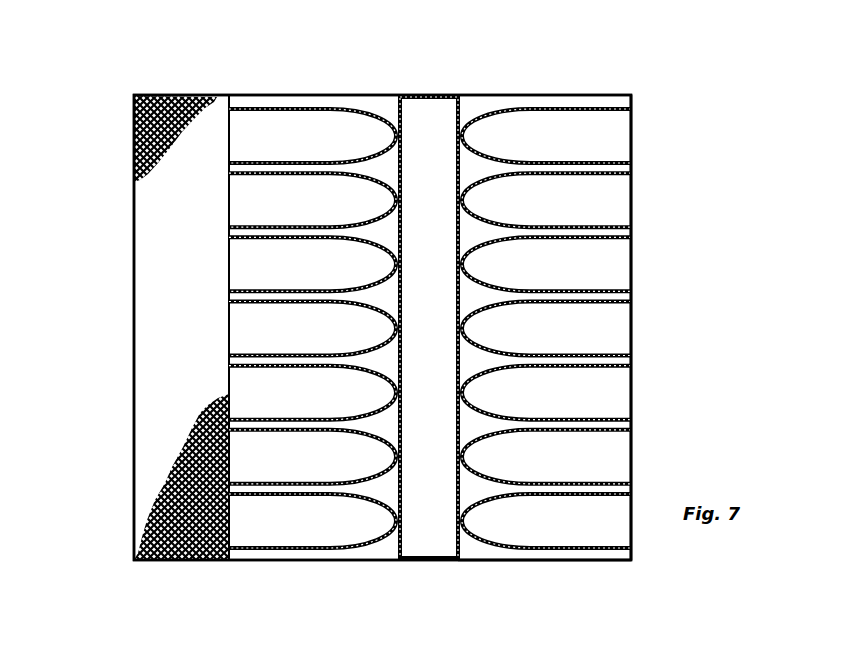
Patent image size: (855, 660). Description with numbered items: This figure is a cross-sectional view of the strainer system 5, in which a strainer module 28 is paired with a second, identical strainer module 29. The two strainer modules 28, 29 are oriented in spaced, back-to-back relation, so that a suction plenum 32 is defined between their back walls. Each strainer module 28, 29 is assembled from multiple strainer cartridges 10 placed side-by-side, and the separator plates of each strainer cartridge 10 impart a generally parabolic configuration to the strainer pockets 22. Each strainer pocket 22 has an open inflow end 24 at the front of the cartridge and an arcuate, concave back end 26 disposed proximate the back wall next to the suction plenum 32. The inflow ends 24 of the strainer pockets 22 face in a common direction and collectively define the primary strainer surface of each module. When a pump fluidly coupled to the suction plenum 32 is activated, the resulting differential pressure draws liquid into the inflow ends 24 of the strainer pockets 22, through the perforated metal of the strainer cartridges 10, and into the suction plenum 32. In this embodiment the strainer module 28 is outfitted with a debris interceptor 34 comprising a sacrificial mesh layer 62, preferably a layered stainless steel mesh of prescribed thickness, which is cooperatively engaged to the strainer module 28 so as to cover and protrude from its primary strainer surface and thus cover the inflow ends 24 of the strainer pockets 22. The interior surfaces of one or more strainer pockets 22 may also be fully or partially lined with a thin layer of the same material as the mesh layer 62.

The strainer system 5 is at (487, 62).
The strainer cartridge 10 is at (278, 83).
The strainer pocket 22 is at (562, 203).
The inflow end 24 is at (638, 268).
The back end 26 is at (456, 192).
The strainer module 28 is at (282, 568).
The second strainer module 29 is at (538, 568).
The suction plenum 32 is at (420, 540).
The debris interceptor 34 is at (115, 272).
The sacrificial mesh layer 62 is at (155, 372).